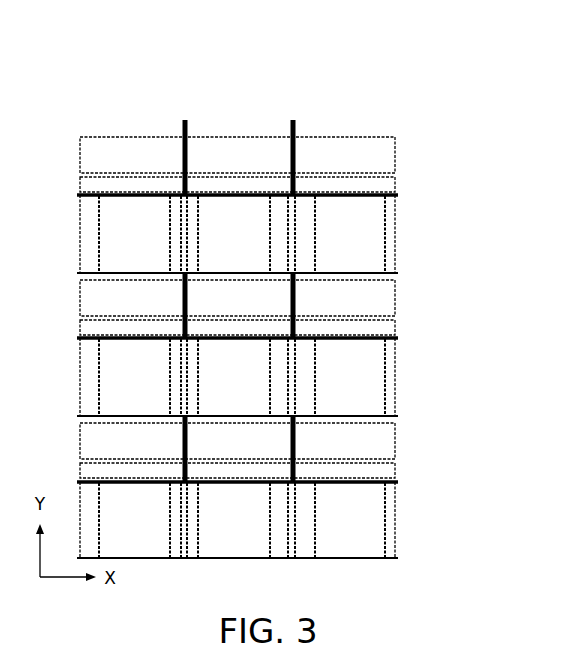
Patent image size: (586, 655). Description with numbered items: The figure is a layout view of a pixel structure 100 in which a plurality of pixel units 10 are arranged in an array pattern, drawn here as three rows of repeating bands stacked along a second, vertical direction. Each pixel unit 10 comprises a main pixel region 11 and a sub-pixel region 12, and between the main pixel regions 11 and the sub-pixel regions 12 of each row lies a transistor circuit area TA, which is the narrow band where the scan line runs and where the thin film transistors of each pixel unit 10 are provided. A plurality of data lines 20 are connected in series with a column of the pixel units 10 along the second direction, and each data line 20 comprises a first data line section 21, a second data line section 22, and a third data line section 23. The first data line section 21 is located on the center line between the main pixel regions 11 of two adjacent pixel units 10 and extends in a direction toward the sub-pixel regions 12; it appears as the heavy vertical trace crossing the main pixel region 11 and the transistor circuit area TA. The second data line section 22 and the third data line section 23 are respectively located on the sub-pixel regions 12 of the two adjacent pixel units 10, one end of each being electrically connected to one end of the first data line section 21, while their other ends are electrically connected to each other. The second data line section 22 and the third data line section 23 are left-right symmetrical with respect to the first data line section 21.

The pixel structure 100 is at (125, 66).
The pixel unit 10 is at (462, 148).
The main pixel region 11 is at (372, 163).
The transistor circuit area TA is at (375, 188).
The sub-pixel region 12 is at (375, 223).
The data line 20 is at (255, 95).
The first data line section 21 is at (294, 123).
The second data line section 22 is at (274, 193).
The third data line section 23 is at (300, 193).